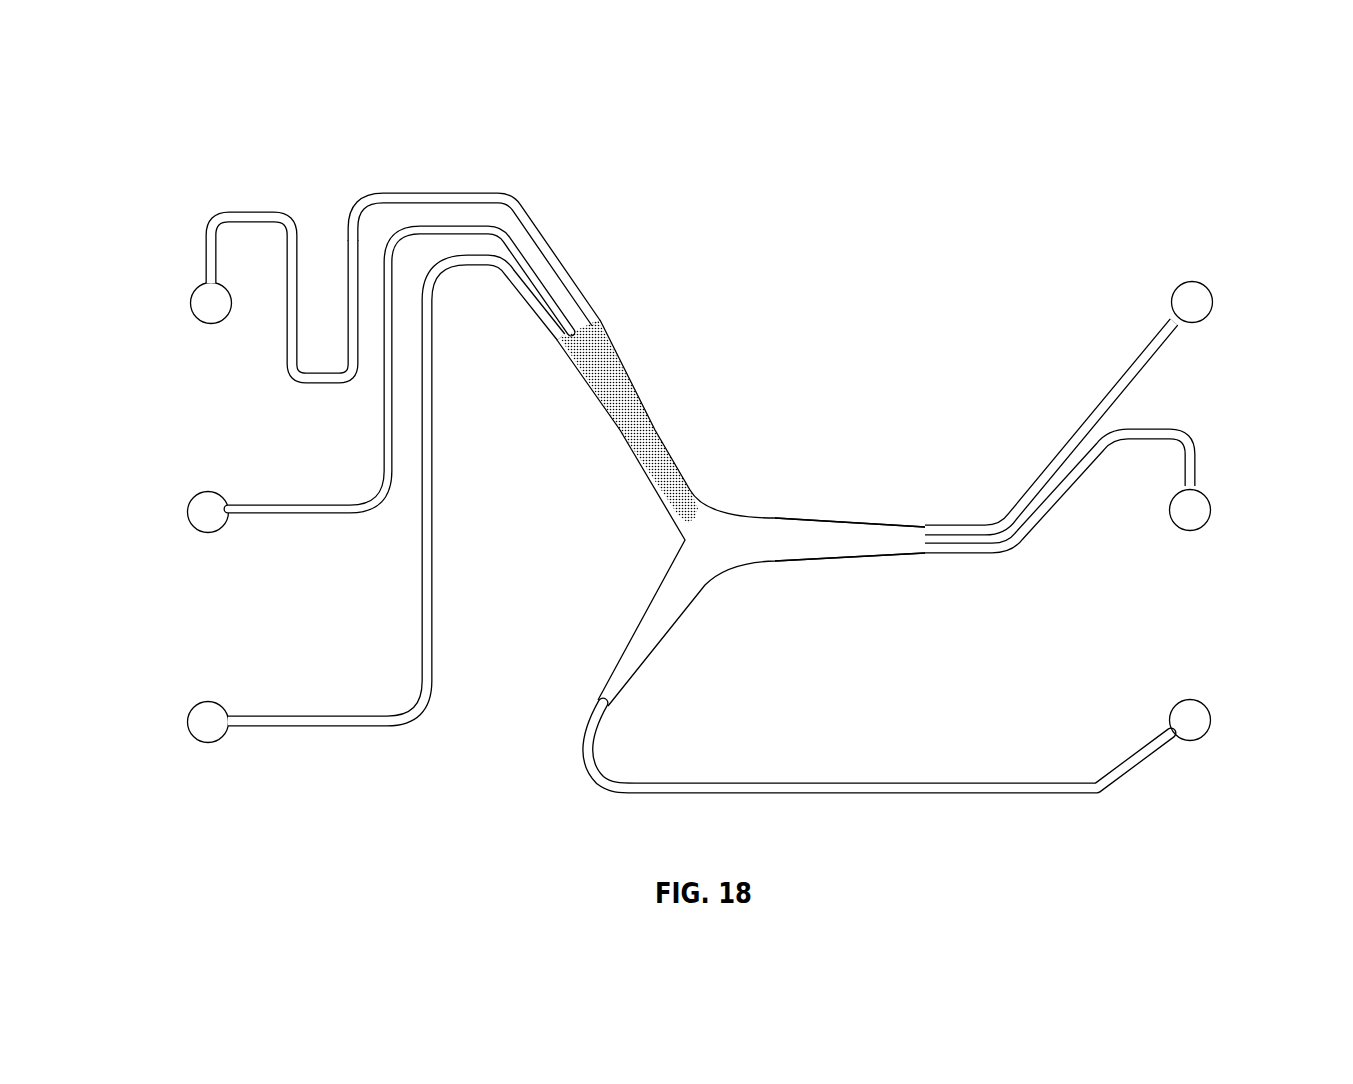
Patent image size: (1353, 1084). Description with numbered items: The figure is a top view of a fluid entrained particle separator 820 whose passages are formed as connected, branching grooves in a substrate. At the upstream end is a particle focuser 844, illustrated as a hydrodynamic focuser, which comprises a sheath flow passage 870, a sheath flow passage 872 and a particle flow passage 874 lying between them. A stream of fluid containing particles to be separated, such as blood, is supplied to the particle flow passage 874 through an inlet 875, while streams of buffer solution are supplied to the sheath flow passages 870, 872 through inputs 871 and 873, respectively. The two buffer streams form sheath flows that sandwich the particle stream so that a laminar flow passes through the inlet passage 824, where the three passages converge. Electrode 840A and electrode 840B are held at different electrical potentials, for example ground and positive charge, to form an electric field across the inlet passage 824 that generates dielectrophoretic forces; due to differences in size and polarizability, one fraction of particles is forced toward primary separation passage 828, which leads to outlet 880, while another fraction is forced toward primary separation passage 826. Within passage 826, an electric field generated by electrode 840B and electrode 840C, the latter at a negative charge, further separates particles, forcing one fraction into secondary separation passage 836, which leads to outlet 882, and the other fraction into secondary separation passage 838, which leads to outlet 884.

The fluid entrained particle separator 820 is at (216, 120).
The particle focuser 844 is at (441, 183).
The sheath flow passage 870 is at (250, 208).
The input 871 is at (190, 300).
The inlet passage 824 is at (612, 340).
The electrode 840A is at (615, 422).
The electrode 840B is at (682, 470).
The electrode 840C is at (842, 563).
The primary separation passage 826 is at (853, 520).
The primary separation passage 828 is at (628, 643).
The secondary separation passage 836 is at (1130, 365).
The secondary separation passage 838 is at (1153, 428).
The outlet 882 is at (1195, 282).
The outlet 884 is at (1212, 510).
The outlet 880 is at (1212, 722).
The inlet 875 is at (188, 512).
The particle flow passage 874 is at (300, 518).
The input 873 is at (188, 722).
The sheath flow passage 872 is at (305, 728).